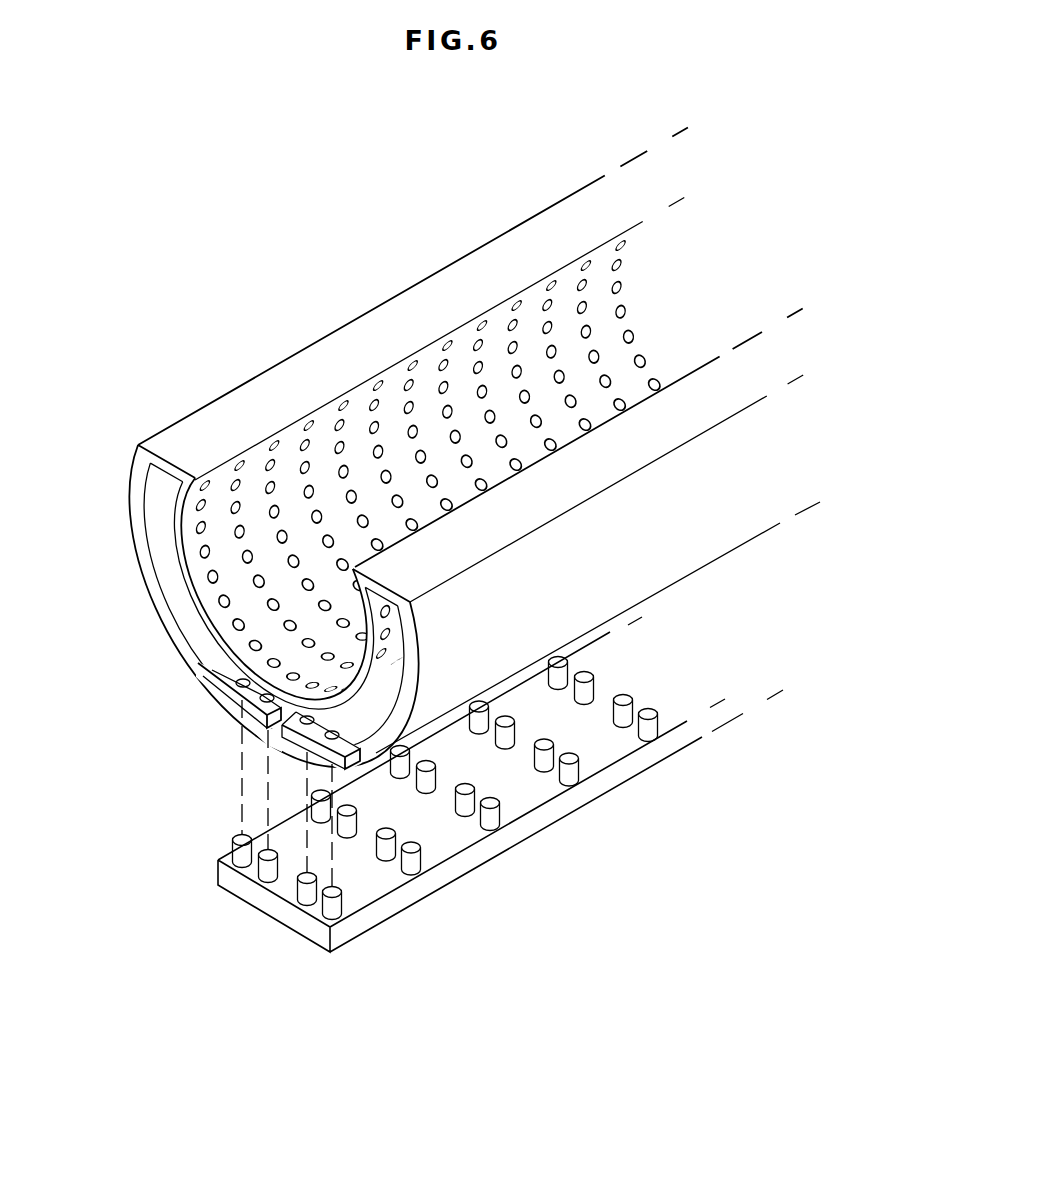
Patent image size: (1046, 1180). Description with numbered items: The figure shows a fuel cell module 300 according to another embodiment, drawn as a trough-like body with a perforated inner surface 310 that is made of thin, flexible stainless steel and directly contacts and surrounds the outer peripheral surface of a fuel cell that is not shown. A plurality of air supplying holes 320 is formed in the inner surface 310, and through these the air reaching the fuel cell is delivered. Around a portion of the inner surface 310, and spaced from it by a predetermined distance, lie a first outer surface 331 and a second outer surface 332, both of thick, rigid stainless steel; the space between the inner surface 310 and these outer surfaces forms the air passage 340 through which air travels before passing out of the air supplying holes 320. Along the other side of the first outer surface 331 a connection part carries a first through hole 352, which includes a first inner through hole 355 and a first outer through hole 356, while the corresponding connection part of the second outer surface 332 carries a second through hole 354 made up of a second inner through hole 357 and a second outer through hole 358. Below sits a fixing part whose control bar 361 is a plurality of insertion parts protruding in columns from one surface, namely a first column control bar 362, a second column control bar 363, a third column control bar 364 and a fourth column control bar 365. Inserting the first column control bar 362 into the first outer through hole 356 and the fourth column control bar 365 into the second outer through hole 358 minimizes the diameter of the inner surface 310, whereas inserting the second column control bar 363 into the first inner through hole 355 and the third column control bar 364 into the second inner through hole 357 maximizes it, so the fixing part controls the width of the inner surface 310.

The fuel cell module 300 is at (320, 327).
The inner surface 310 is at (210, 597).
The air supplying hole 320 is at (210, 572).
The first outer surface 331 is at (149, 555).
The second outer surface 332 is at (708, 550).
The air passage 340 is at (156, 523).
The first through hole 352 is at (113, 670).
The second through hole 354 is at (113, 736).
The first inner through hole 355 is at (260, 698).
The first outer through hole 356 is at (237, 680).
The second inner through hole 357 is at (300, 722).
The second outer through hole 358 is at (325, 736).
The control bar 361 is at (202, 995).
The first column control bar 362 is at (237, 850).
The second column control bar 363 is at (263, 873).
The third column control bar 364 is at (303, 897).
The fourth column control bar 365 is at (333, 903).